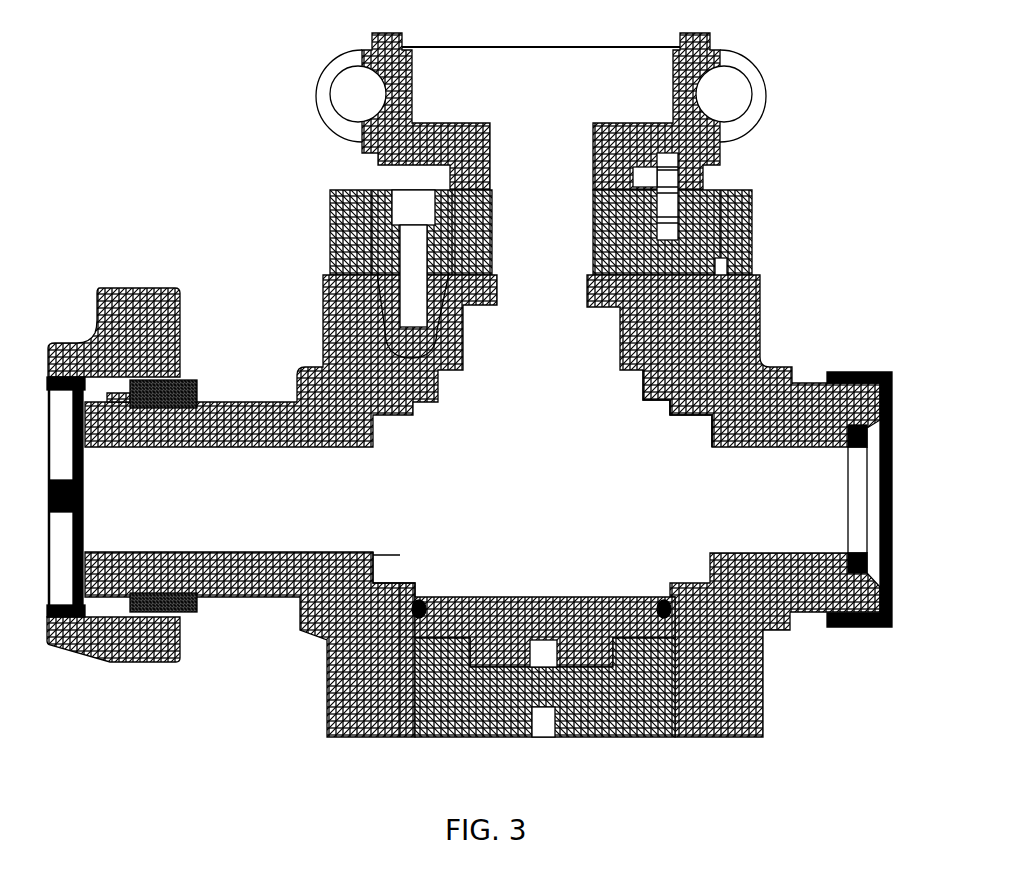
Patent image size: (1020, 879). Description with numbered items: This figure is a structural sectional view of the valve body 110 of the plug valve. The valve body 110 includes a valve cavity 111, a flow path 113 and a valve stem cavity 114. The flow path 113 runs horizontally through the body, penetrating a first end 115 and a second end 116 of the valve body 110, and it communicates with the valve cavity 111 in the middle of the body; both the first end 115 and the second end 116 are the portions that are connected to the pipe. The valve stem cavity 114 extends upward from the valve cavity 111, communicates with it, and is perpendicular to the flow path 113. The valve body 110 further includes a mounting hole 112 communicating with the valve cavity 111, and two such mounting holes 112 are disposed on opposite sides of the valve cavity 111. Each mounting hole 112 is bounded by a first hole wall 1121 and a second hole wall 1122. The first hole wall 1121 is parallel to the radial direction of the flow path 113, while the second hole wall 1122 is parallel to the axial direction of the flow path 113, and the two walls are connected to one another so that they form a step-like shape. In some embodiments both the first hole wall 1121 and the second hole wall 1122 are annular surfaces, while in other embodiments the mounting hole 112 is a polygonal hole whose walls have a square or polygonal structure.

The valve body 110 is at (476, 385).
The valve cavity 111 is at (548, 490).
The mounting hole 112 is at (465, 532).
The first hole wall 1121 is at (372, 557).
The second hole wall 1122 is at (393, 582).
The flow path 113 is at (196, 496).
The valve stem cavity 114 is at (562, 228).
The first end 115 is at (93, 562).
The second end 116 is at (858, 395).